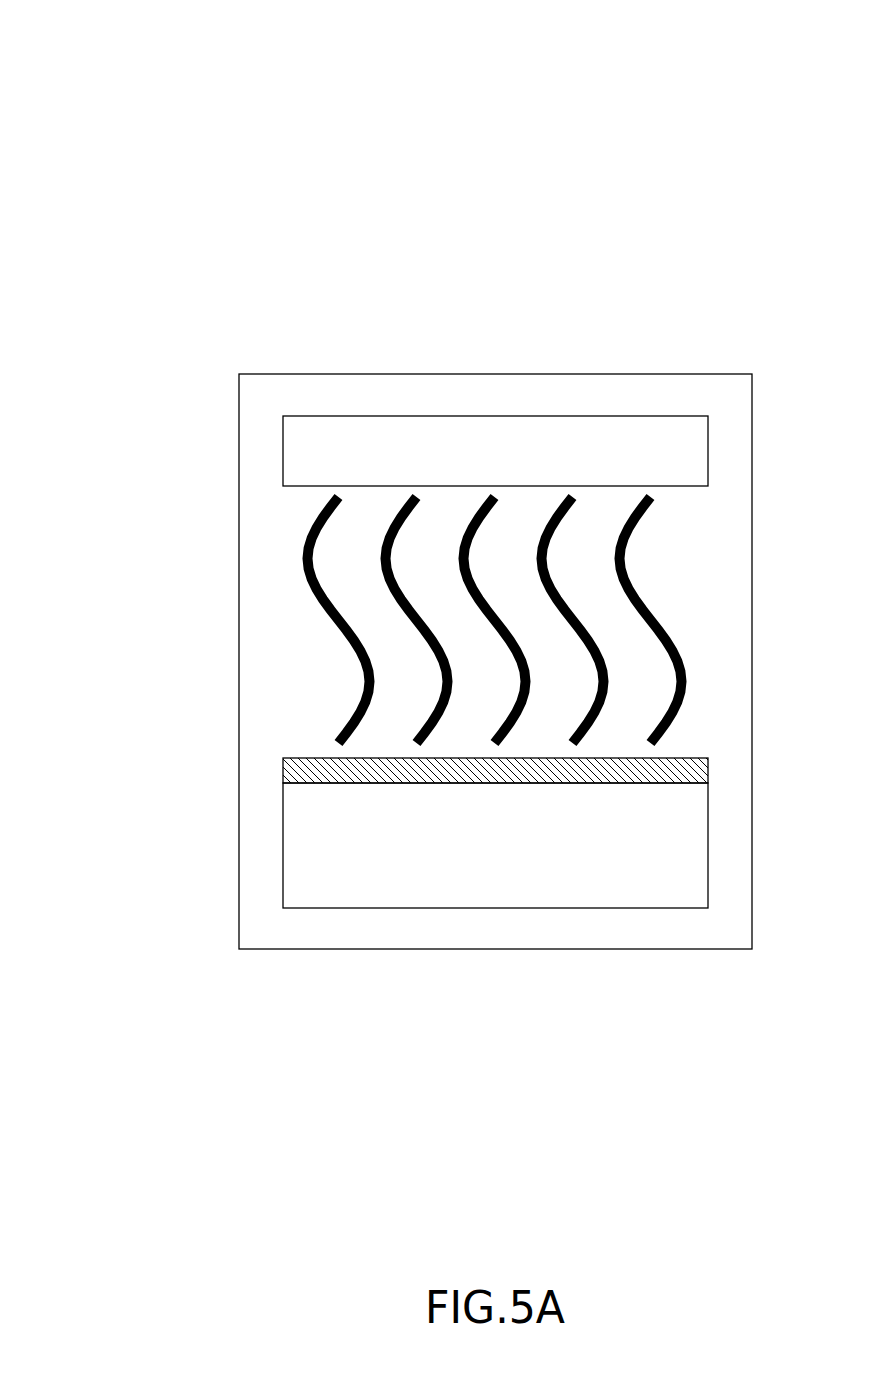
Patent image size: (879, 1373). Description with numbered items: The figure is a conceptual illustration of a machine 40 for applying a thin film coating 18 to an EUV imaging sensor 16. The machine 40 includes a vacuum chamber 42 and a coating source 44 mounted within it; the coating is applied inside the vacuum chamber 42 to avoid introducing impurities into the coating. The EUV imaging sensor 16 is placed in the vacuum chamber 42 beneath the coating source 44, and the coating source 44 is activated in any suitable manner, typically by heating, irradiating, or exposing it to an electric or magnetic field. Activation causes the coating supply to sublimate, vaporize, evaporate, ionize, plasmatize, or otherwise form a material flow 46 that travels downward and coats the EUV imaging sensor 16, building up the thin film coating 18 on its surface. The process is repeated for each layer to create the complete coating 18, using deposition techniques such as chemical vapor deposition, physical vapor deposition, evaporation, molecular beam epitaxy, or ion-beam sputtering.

The machine 40 is at (128, 94).
The vacuum chamber 42 is at (239, 400).
The coating source 44 is at (283, 452).
The material flow 46 is at (702, 558).
The thin film coating 18 is at (720, 770).
The EUV imaging sensor 16 is at (283, 848).